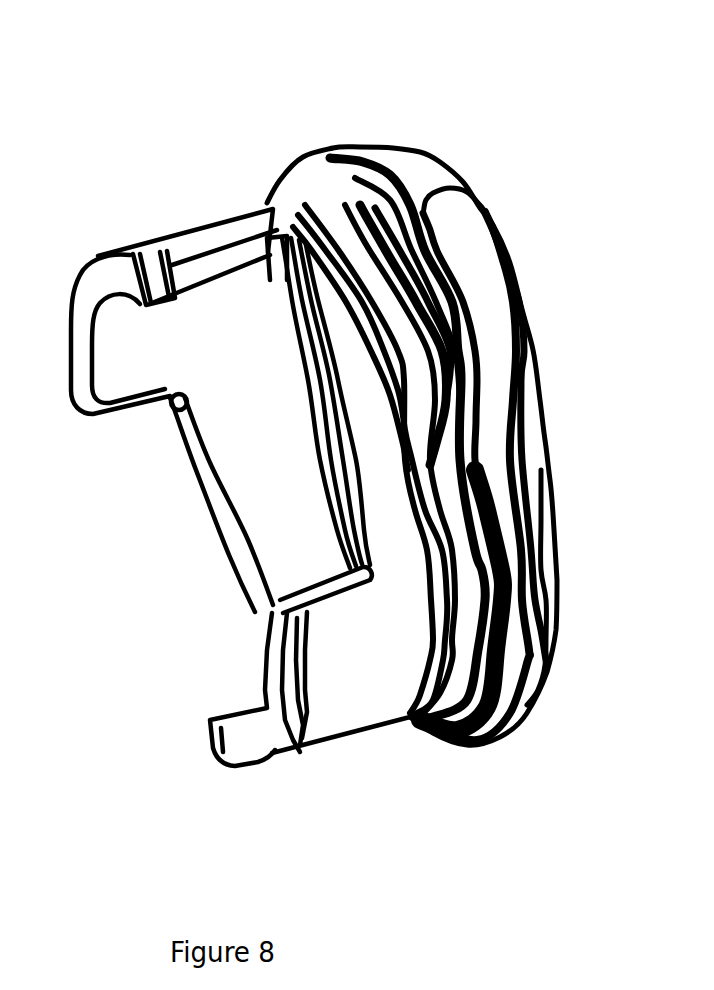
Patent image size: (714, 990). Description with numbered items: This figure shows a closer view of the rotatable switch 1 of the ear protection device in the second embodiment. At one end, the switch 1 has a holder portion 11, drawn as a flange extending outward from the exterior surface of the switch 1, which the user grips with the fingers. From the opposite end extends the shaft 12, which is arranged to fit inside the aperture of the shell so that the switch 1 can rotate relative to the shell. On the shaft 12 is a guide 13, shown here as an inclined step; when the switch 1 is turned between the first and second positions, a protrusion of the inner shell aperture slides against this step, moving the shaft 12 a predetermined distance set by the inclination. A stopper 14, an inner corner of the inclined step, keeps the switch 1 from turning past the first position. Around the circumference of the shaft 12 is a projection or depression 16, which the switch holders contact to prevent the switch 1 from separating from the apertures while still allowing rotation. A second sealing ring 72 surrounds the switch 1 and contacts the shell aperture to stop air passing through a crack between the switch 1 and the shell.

The rotatable switch 1 is at (500, 113).
The holder portion 11 is at (540, 346).
The shaft 12 is at (283, 442).
The guide 13 is at (203, 537).
The stopper 14 is at (166, 410).
The projection or depression 16 is at (407, 722).
The second sealing ring 72 is at (480, 752).